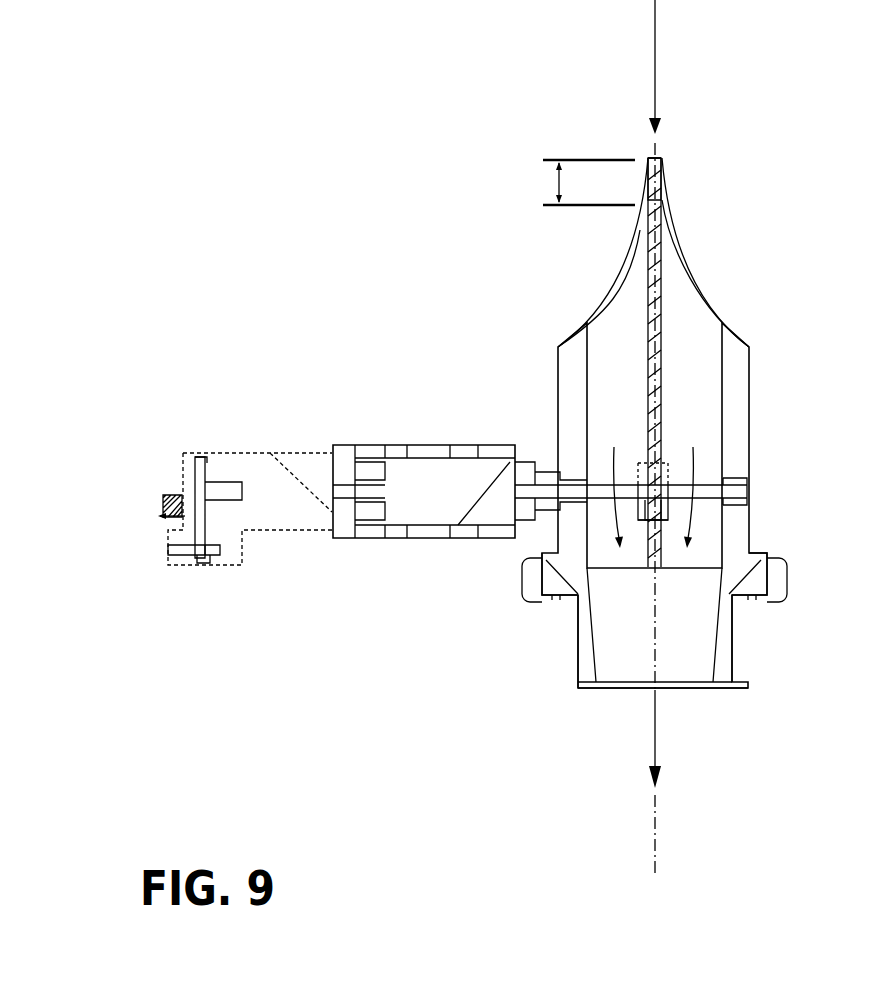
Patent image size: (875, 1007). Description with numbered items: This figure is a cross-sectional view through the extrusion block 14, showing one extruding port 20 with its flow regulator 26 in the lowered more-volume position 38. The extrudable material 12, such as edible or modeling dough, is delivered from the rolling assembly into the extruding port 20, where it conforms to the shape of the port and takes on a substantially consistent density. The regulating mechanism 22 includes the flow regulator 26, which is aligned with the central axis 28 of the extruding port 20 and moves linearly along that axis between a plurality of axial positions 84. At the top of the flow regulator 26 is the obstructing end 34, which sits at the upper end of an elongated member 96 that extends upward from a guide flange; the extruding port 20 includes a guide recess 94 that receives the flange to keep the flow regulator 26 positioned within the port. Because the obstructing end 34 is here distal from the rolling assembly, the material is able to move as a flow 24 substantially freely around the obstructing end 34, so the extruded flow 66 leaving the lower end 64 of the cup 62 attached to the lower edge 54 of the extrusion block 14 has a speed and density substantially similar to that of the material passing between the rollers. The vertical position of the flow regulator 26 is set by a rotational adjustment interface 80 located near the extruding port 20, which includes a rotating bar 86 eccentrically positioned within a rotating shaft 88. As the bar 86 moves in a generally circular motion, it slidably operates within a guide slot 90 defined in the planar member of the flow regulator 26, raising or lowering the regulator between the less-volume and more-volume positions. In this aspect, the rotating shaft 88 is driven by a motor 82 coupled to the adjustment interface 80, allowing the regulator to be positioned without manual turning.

The extrudable material 12 is at (640, 76).
The extrusion block 14 is at (772, 352).
The extruding port 20 is at (708, 265).
The regulating mechanism 22 is at (628, 143).
The flow 24 is at (655, 83).
The flow regulator 26 is at (647, 282).
The central axis 28 is at (658, 835).
The obstructing end 34 is at (660, 192).
The more-volume position 38 is at (630, 308).
The lower edge 54 is at (557, 598).
The cup 62 is at (583, 658).
The lower end 64 is at (605, 702).
The extruded flow 66 is at (658, 738).
The rotational adjustment interface 80 is at (412, 420).
The motor 82 is at (380, 453).
The plurality of axial positions 84 is at (553, 183).
The rotating bar 86 is at (668, 530).
The rotating shaft 88 is at (600, 483).
The guide slot 90 is at (643, 493).
The guide recess 94 is at (657, 530).
The elongated member 96 is at (662, 252).